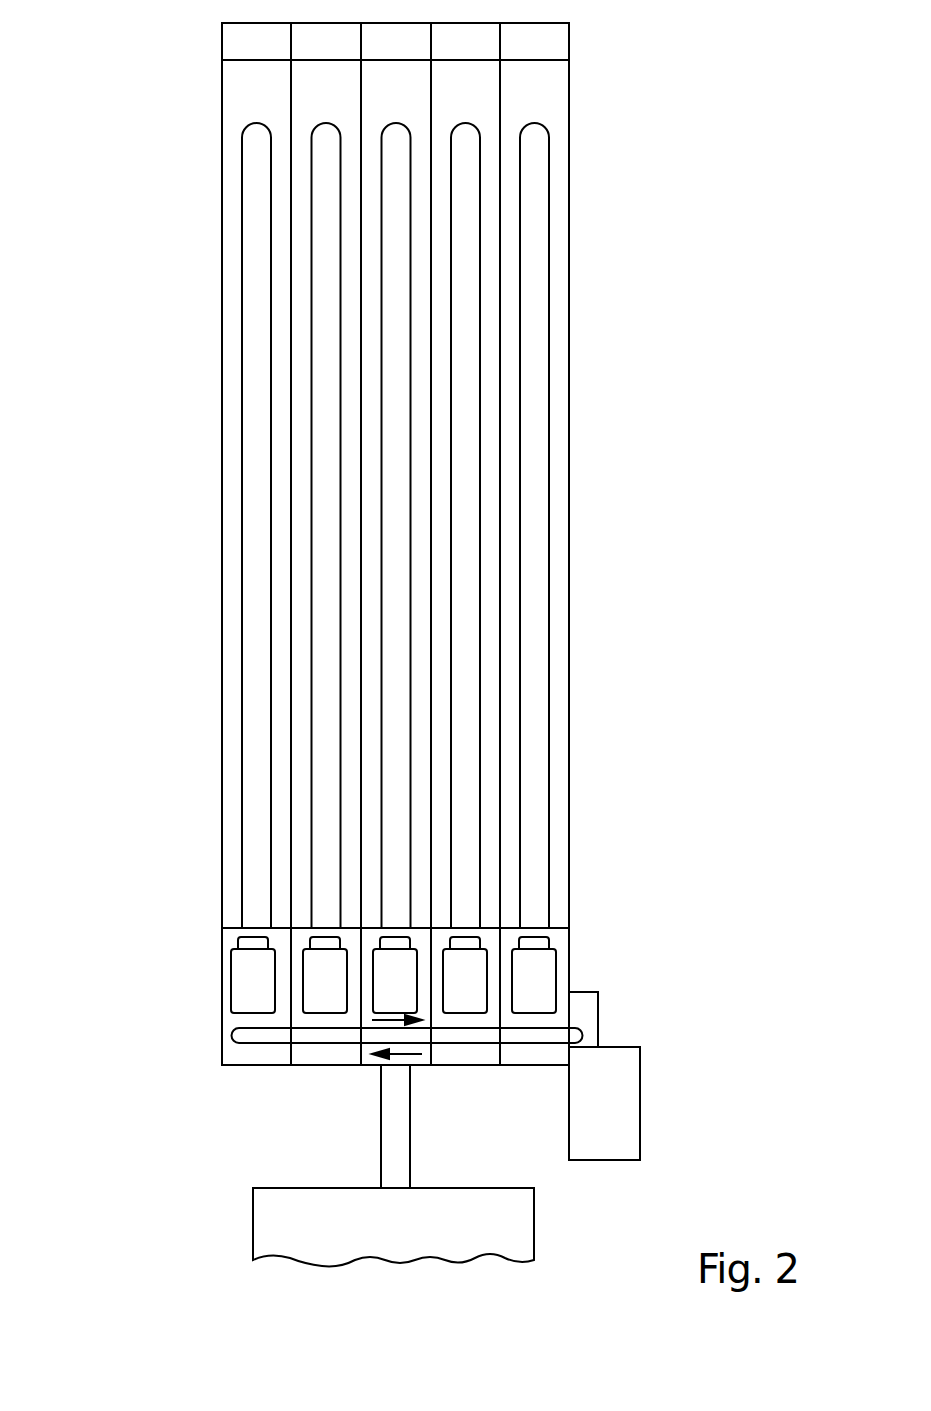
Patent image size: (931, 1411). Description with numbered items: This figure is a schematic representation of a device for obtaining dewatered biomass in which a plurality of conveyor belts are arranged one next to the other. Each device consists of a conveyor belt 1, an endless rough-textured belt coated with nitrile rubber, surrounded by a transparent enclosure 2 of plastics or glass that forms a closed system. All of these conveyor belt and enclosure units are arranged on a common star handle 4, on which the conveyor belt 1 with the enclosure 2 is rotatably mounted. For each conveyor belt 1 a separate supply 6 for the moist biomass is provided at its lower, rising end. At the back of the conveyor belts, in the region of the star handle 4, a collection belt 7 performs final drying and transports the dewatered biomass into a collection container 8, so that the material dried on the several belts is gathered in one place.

The conveyor belt 1 is at (535, 355).
The transparent enclosure 2 is at (542, 91).
The star handle 4 is at (392, 1138).
The supply 6 is at (317, 973).
The collection belt 7 is at (265, 1035).
The collection container 8 is at (593, 1097).